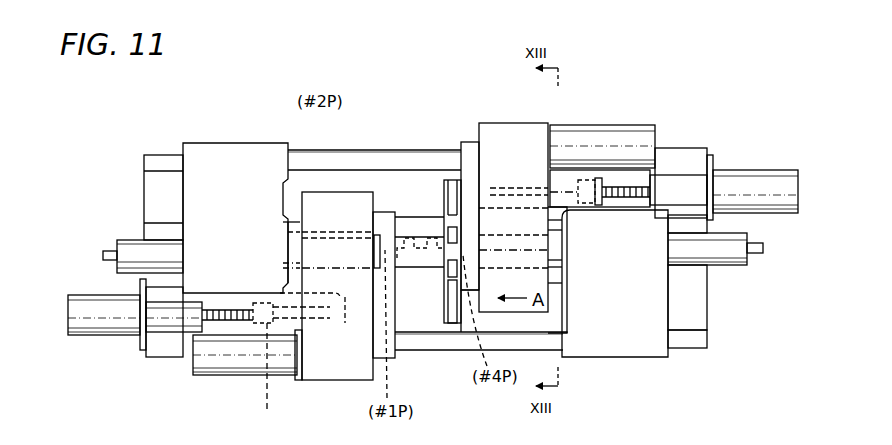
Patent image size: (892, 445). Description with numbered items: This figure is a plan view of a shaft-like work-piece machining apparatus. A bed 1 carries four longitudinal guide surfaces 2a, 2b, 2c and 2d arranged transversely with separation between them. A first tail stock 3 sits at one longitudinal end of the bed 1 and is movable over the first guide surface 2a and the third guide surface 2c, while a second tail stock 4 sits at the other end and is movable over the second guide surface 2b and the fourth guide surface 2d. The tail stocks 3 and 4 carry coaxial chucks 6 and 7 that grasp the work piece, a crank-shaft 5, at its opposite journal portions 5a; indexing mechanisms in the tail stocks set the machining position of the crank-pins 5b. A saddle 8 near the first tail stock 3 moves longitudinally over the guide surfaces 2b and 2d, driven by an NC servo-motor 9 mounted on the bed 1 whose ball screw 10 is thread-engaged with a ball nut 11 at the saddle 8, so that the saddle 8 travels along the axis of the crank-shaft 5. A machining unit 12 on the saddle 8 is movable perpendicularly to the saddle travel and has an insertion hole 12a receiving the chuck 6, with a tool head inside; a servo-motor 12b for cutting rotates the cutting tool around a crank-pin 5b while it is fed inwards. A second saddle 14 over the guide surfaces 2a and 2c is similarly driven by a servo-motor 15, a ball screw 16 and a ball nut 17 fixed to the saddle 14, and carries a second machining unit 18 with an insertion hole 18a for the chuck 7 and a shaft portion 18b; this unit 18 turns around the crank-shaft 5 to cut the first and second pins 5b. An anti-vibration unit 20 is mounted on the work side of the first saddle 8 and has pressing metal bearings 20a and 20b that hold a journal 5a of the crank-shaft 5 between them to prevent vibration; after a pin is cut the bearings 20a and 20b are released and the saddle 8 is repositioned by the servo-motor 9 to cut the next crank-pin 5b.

The bed 1 is at (145, 152).
The first guide surface 2a is at (690, 342).
The second guide surface 2b is at (695, 275).
The third guide surface 2c is at (695, 223).
The fourth guide surface 2d is at (680, 149).
The first tail stock 3 is at (628, 357).
The second tail stock 4 is at (233, 152).
The crank-shaft 5 is at (428, 258).
The journal portion 5a is at (463, 278).
The crank-pin 5b is at (407, 243).
The chuck 6 is at (560, 248).
The chuck 7 is at (288, 254).
The saddle 8 is at (470, 141).
The NC servo-motor 9 is at (757, 170).
The ball screw 10 is at (633, 186).
The ball nut 11 is at (588, 182).
The machining unit 12 is at (519, 123).
The insertion hole 12a is at (500, 208).
The servo-motor 12b is at (573, 135).
The second saddle 14 is at (378, 340).
The servo-motor 15 is at (102, 330).
The ball screw 16 is at (198, 316).
The ball nut 17 is at (266, 358).
The second machining unit 18 is at (320, 382).
The insertion hole 18a is at (326, 286).
The slide table shaft 18b is at (232, 370).
The anti-vibration unit 20 is at (458, 326).
The pressing metal bearing 20a is at (458, 235).
The pressing metal bearing 20b is at (452, 320).